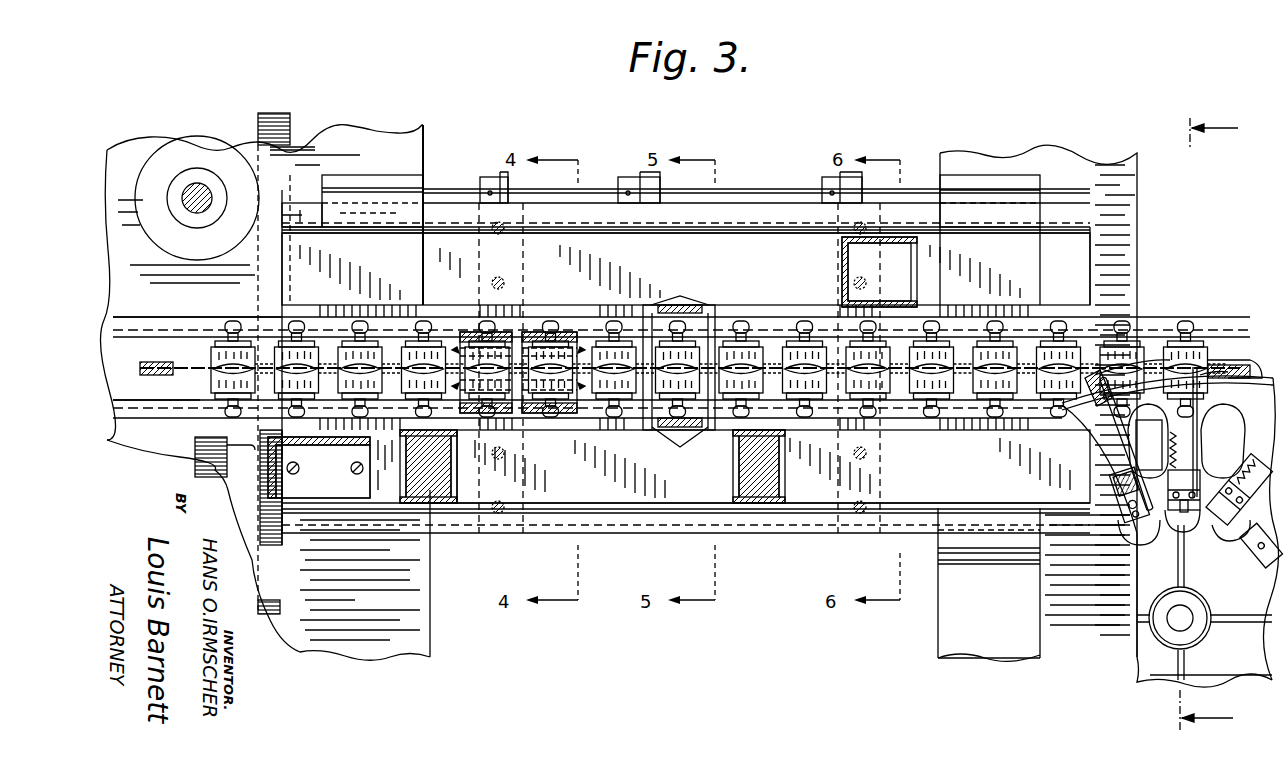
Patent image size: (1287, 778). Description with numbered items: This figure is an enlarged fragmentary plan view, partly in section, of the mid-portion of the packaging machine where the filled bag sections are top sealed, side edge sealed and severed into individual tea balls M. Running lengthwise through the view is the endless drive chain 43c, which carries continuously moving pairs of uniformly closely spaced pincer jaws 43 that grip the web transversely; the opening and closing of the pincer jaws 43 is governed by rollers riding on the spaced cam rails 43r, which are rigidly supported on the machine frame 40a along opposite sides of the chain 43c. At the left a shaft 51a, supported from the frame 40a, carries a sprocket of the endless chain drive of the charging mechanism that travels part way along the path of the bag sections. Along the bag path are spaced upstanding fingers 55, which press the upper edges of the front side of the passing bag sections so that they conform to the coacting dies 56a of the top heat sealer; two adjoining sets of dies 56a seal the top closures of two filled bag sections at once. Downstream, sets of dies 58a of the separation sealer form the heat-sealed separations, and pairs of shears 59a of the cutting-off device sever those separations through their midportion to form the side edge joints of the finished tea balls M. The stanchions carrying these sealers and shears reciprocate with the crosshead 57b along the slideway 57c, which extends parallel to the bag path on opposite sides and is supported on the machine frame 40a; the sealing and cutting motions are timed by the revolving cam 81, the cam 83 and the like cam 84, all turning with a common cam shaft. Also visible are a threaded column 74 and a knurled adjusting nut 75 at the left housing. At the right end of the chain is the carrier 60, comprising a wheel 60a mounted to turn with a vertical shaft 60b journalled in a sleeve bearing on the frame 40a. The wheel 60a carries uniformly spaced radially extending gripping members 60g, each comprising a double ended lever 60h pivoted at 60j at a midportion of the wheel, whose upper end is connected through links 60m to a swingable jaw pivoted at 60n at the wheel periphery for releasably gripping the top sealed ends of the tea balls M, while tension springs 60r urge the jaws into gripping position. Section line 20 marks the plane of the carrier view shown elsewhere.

The section line 20 is at (1221, 425).
The machine frame 40a is at (993, 648).
The pincer jaws 43 is at (218, 340).
The endless drive chain 43c is at (152, 364).
The cam rails 43r is at (165, 322).
The shaft 51a is at (197, 183).
The upstanding fingers 55 is at (398, 418).
The dies of the top heat sealer 56a is at (535, 355).
The crosshead 57b is at (686, 368).
The slideway 57c is at (353, 225).
The dies of the separation sealer 58a is at (690, 390).
The shears 59a is at (834, 322).
The carrier 60 is at (1258, 368).
The wheel 60a is at (1228, 665).
The vertical shaft 60b is at (1186, 612).
The gripping members 60g is at (1110, 453).
The double ended levers 60h is at (1172, 520).
The pivot 60j is at (1200, 522).
The links 60m is at (1108, 388).
The jaw pivot 60n is at (1215, 378).
The tension springs 60r is at (1190, 455).
The threaded column 74 is at (272, 113).
The knurled adjusting nut 75 is at (227, 447).
The revolving cam 81 is at (500, 182).
The cam 83 is at (642, 185).
The cam 84 is at (830, 185).
The tea ball M is at (1130, 362).